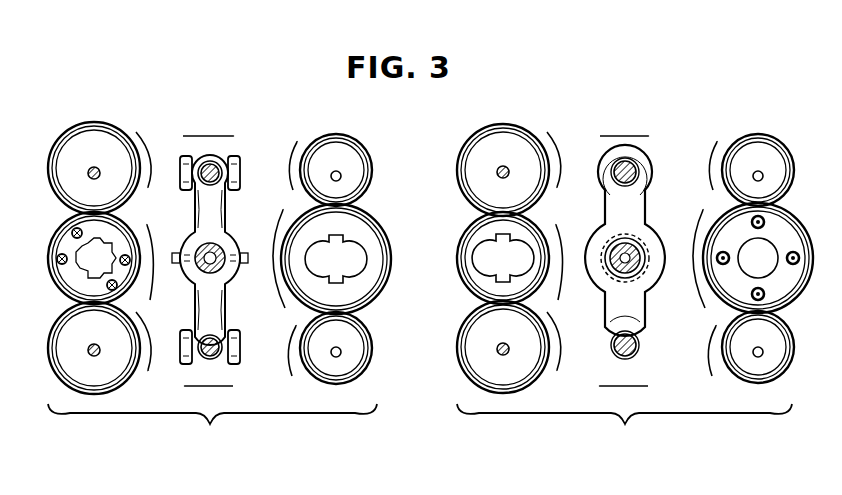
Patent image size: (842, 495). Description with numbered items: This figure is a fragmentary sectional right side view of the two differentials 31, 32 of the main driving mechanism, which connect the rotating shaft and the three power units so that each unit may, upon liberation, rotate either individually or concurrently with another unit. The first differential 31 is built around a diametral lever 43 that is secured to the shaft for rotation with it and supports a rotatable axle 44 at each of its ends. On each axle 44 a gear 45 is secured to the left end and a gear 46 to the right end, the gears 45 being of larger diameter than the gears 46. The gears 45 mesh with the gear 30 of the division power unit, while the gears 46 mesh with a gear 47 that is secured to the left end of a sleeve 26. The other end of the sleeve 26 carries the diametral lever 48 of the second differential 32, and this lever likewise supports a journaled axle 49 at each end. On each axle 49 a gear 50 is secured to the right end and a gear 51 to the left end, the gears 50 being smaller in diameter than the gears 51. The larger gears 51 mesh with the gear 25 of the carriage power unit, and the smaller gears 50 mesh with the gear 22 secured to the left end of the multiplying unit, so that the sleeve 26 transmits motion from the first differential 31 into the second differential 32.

The gear 22 is at (777, 250).
The gear 25 is at (503, 258).
The sleeve 26 is at (605, 258).
The gear 30 is at (94, 258).
The differential 31 is at (212, 294).
The differential 32 is at (624, 294).
The diametral lever 43 is at (222, 204).
The rotatable axle 44 is at (99, 178).
The gear 45 is at (101, 161).
The gear 46 is at (348, 167).
The gear 47 is at (349, 233).
The diametral lever 48 is at (640, 217).
The journaled axle 49 is at (509, 177).
The gear 50 is at (770, 167).
The gear 51 is at (516, 161).